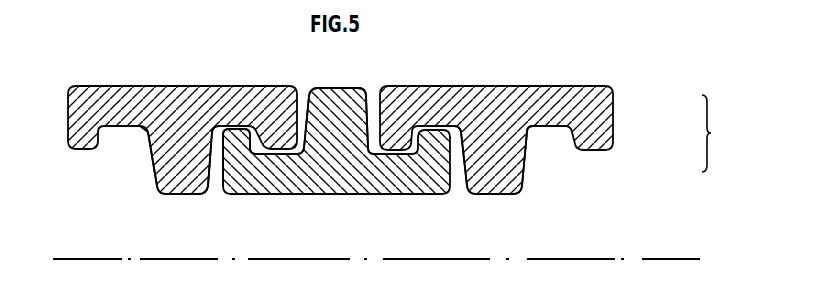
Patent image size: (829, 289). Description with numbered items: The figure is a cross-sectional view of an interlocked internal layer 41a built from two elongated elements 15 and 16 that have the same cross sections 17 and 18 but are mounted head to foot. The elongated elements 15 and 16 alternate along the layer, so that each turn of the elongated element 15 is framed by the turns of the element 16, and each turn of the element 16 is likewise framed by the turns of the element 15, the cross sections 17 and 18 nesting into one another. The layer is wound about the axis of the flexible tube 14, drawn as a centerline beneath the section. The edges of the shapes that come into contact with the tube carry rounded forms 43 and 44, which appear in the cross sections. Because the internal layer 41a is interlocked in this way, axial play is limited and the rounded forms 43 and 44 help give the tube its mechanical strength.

The axis of the flexible tube 14 is at (677, 259).
The elongated element 15 is at (180, 75).
The elongated element 16 is at (348, 78).
The cross section 17 is at (490, 168).
The cross section 18 is at (357, 168).
The internal layer 41a is at (723, 133).
The rounded form 43 is at (203, 197).
The rounded form 44 is at (228, 199).